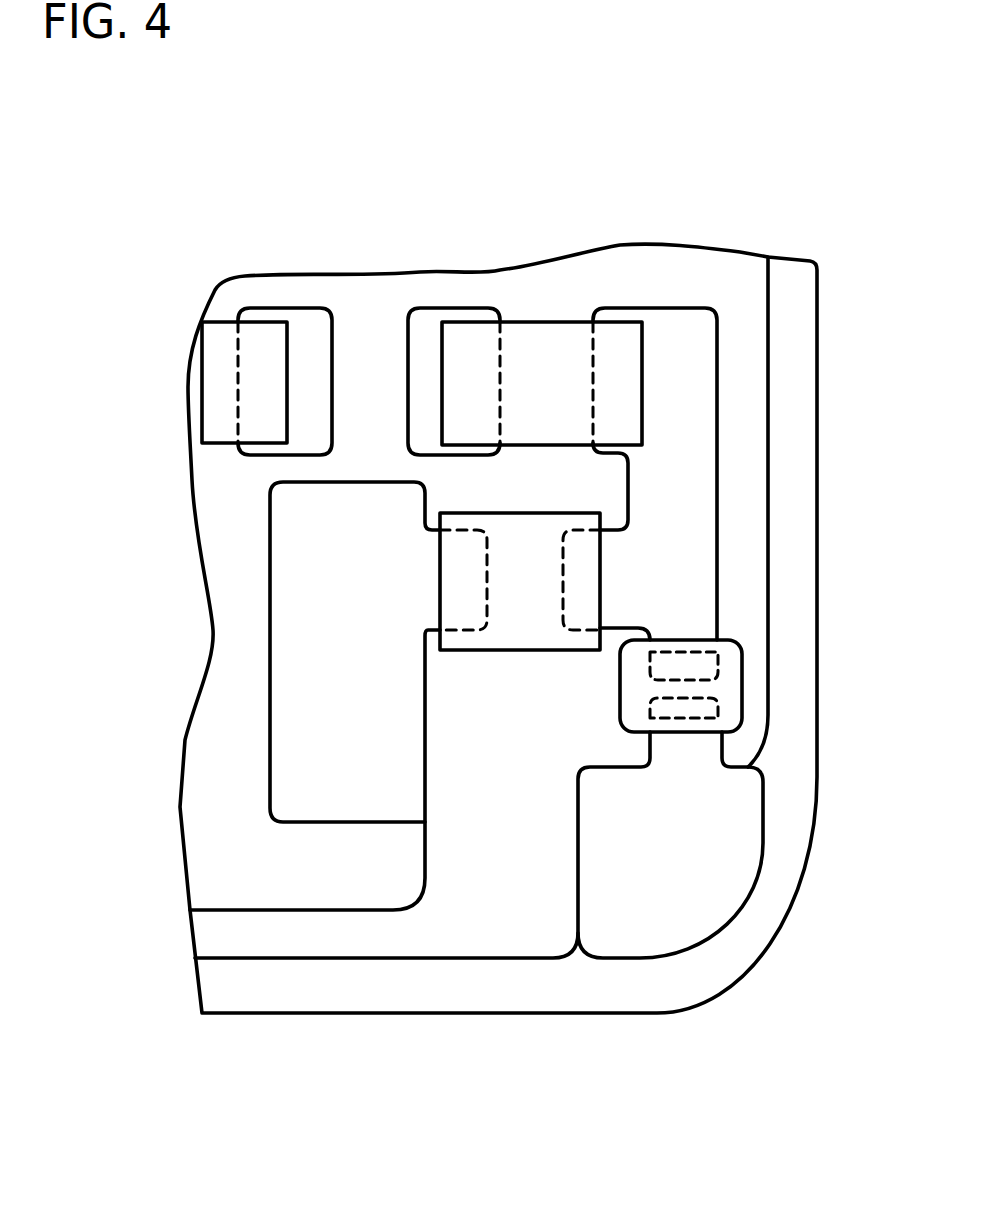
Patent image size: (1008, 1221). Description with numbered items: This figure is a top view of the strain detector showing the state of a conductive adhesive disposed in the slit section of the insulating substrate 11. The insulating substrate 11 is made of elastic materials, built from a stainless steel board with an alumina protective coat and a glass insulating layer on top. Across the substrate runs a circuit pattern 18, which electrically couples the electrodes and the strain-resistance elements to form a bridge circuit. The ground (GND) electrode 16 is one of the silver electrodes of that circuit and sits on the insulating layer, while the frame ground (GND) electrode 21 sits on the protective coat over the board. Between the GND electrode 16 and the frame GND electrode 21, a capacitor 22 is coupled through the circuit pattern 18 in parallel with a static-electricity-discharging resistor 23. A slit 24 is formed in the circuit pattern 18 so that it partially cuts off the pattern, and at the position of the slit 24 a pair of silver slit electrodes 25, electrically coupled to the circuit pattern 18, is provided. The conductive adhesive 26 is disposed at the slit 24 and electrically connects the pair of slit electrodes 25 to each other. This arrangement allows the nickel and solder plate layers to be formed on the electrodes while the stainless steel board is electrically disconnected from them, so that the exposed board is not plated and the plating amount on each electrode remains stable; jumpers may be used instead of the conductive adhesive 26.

The insulating substrate 11 is at (500, 980).
The ground (GND) electrode 16 is at (350, 790).
The circuit pattern 18 is at (682, 462).
The frame ground (GND) electrode 21 is at (670, 882).
The capacitor 22 is at (233, 370).
The static-electricity-discharging resistor 23 is at (523, 592).
The slit 24 is at (728, 678).
The slit electrodes 25 is at (683, 667).
The conductive adhesive 26 is at (728, 692).